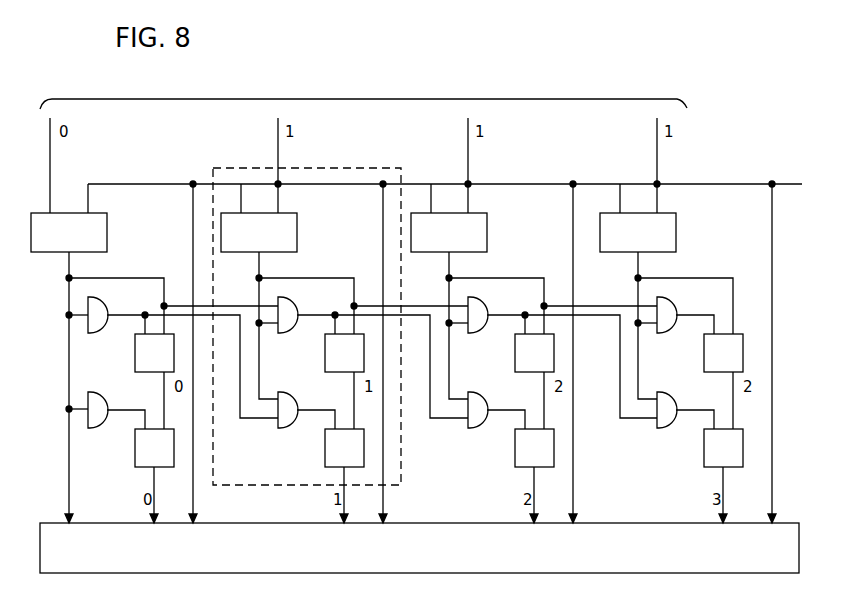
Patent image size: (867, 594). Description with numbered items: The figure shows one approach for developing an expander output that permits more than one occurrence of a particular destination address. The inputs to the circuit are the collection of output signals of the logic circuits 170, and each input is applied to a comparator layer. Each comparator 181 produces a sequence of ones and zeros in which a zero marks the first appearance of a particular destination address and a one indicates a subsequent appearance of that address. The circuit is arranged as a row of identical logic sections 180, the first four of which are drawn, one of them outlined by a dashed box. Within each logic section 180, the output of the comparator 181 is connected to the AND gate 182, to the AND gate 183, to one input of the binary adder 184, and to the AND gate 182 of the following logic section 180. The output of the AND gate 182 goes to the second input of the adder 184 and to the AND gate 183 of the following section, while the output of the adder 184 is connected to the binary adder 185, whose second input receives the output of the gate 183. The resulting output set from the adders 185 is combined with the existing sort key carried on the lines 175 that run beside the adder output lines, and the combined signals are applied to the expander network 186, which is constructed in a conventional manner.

The logic circuits 170 is at (363, 90).
The lines 175 is at (193, 490).
The logic section 180 is at (340, 168).
The comparator 181 is at (107, 213).
The AND gate 182 is at (291, 303).
The AND gate 183 is at (291, 400).
The binary adder 184 is at (325, 353).
The binary adder 185 is at (325, 448).
The expander network 186 is at (627, 523).